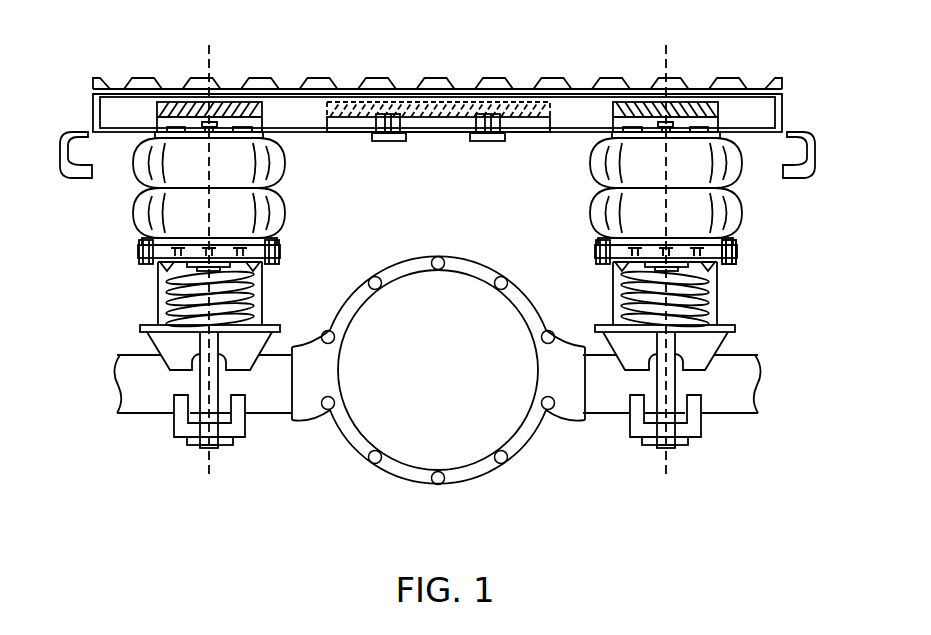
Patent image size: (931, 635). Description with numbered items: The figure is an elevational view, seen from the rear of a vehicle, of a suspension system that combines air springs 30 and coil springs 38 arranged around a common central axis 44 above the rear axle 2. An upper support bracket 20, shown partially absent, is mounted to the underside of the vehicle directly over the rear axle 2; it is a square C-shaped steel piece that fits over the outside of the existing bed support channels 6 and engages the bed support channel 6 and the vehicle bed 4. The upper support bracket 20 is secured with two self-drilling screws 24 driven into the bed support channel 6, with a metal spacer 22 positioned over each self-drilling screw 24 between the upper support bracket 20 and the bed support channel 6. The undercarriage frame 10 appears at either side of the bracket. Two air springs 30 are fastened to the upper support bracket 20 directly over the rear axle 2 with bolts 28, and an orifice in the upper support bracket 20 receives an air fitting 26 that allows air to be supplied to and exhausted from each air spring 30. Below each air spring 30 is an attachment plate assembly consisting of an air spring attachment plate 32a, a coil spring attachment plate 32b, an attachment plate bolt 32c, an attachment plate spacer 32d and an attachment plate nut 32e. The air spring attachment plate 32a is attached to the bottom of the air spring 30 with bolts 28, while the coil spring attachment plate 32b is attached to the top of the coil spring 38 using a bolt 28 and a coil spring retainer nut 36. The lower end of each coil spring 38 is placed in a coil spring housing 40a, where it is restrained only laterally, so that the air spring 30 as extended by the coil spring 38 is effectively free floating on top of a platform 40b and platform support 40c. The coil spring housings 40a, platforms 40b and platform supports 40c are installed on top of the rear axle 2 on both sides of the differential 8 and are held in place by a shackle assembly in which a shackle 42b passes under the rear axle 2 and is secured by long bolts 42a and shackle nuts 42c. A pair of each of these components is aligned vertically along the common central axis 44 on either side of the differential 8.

The rear axle 2 is at (276, 393).
The vehicle bed 4 is at (147, 78).
The bed support channel 6 is at (248, 102).
The differential 8 is at (430, 395).
The undercarriage frame 10 is at (62, 146).
The upper support bracket 20 is at (108, 113).
The metal spacer 22 is at (377, 123).
The self-drilling screw 24 is at (493, 142).
The air fitting 26 is at (672, 128).
The bolt 28 is at (615, 134).
The air spring 30 is at (134, 215).
The air spring attachment plate 32a is at (280, 241).
The coil spring attachment plate 32b is at (279, 263).
The attachment plate bolt 32c is at (598, 241).
The attachment plate spacer 32d is at (595, 252).
The attachment plate nut 32e is at (597, 266).
The coil spring retainer nut 36 is at (250, 274).
The coil spring 38 is at (175, 293).
The coil spring housing 40a is at (160, 313).
The platform 40b is at (162, 333).
The platform support 40c is at (170, 352).
The long bolt 42a is at (198, 373).
The shackle 42b is at (173, 425).
The shackle nut 42c is at (200, 445).
The central axis 44 is at (212, 50).